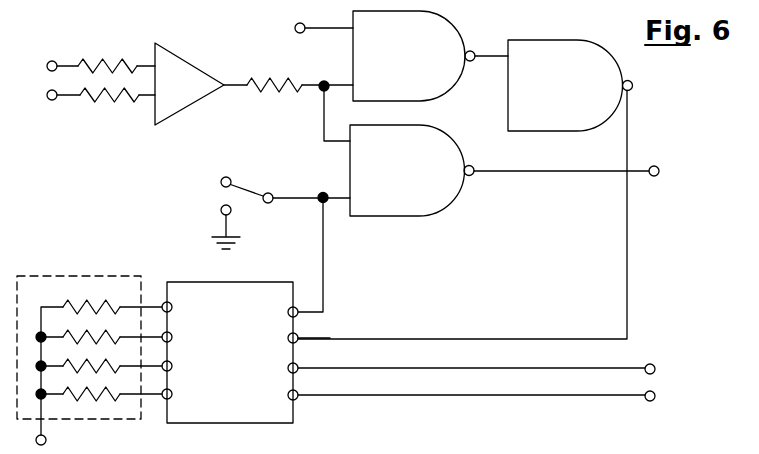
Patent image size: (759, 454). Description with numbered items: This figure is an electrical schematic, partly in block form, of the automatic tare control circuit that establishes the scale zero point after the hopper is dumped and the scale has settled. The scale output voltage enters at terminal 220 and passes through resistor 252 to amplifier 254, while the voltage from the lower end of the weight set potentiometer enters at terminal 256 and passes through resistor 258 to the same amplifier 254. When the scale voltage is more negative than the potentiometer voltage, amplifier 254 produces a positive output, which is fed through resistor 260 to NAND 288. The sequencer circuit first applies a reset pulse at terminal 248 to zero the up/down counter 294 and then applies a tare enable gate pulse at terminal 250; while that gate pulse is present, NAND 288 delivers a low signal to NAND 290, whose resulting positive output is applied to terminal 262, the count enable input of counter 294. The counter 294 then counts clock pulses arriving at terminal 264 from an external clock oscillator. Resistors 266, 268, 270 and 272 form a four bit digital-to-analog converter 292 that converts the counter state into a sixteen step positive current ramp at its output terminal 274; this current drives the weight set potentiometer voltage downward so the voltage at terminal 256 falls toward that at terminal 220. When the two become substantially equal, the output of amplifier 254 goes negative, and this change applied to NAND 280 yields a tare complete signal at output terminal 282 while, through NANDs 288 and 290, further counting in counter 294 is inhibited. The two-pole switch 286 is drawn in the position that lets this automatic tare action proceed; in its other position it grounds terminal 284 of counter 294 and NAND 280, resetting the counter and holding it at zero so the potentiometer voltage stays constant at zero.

The terminal 220 is at (55, 62).
The resistor 252 is at (81, 60).
The amplifier 254 is at (178, 52).
The terminal 256 is at (62, 108).
The resistor 258 is at (122, 104).
The terminal 250 is at (295, 27).
The resistor 260 is at (276, 91).
The NAND 288 is at (418, 65).
The NAND 290 is at (572, 95).
The NAND 280 is at (412, 180).
The output terminal 282 is at (660, 170).
The two-pole switch 286 is at (206, 196).
The up/down counter 294 is at (203, 282).
The terminal 284 is at (299, 313).
The terminal 262 is at (299, 339).
The terminal 248 is at (667, 360).
The terminal 264 is at (655, 398).
The four bit digital-to-analog converter 292 is at (58, 300).
The resistor 266 is at (97, 300).
The resistor 268 is at (99, 330).
The resistor 270 is at (101, 359).
The resistor 272 is at (99, 387).
The output terminal 274 is at (44, 445).